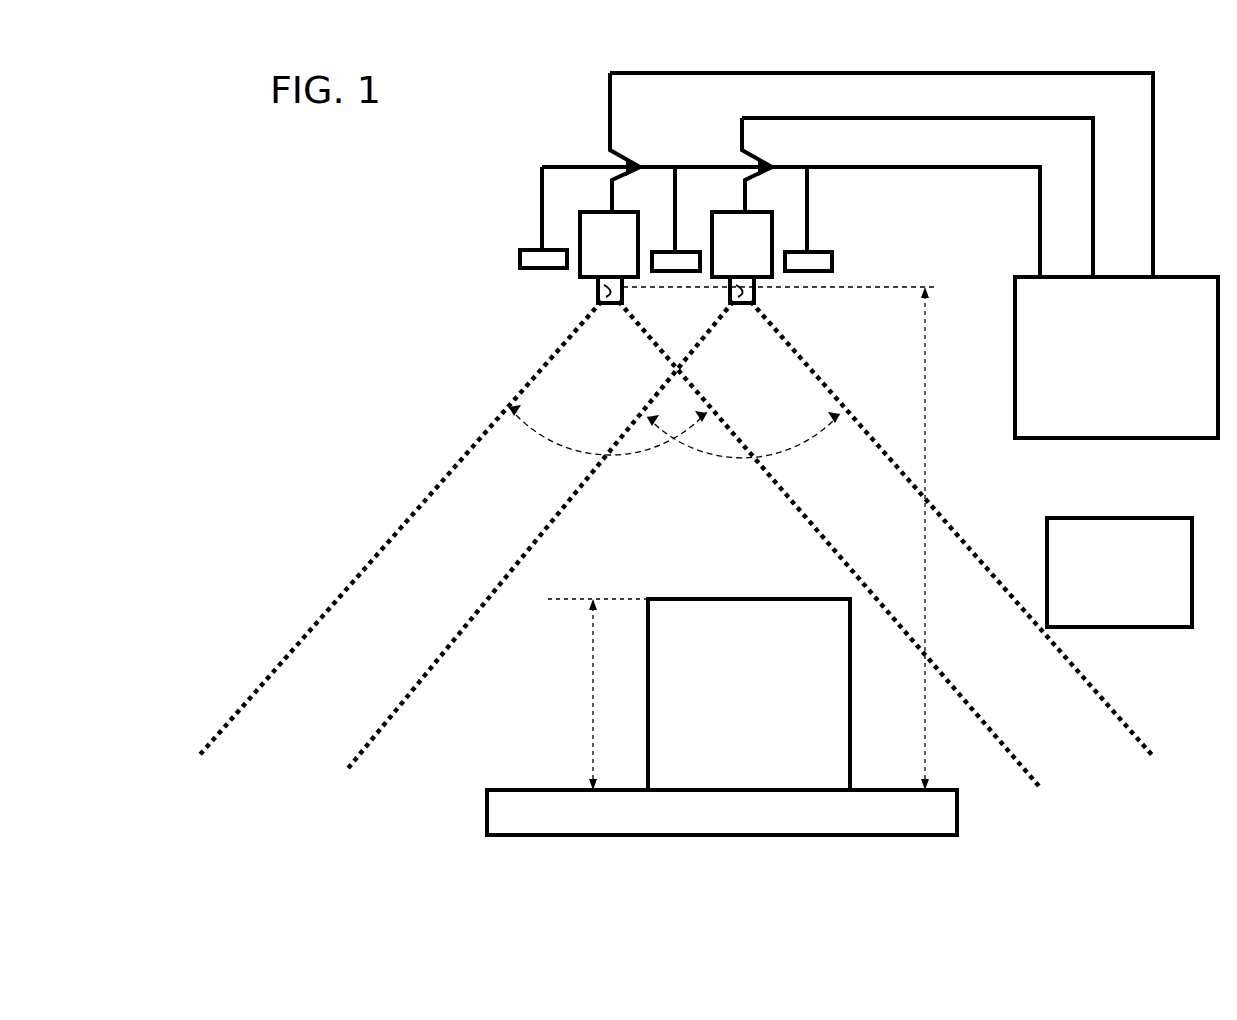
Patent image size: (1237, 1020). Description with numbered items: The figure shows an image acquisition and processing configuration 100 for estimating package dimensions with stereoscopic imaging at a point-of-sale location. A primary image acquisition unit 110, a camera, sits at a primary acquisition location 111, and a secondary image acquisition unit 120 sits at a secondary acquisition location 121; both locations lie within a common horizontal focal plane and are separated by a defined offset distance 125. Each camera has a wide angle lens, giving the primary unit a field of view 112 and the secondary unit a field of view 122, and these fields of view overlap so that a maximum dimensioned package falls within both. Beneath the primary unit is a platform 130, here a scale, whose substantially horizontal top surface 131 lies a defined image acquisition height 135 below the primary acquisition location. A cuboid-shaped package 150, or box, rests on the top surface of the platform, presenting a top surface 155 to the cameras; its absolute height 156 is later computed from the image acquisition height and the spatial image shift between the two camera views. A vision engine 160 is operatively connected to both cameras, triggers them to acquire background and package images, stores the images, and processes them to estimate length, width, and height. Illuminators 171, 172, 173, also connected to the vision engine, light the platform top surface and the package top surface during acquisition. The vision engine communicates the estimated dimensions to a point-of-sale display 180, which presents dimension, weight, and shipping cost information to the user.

The image acquisition and processing configuration 100 is at (342, 198).
The primary image acquisition unit 110 is at (727, 252).
The primary acquisition location 111 is at (741, 305).
The field of view 112 is at (798, 450).
The secondary image acquisition unit 120 is at (594, 252).
The secondary acquisition location 121 is at (603, 305).
The field of view 122 is at (548, 440).
The offset distance 125 is at (650, 290).
The platform 130 is at (775, 823).
The top surface 131 is at (873, 790).
The image acquisition height 135 is at (925, 330).
The package 150 is at (734, 740).
The top surface 155 is at (698, 598).
The height 156 is at (592, 681).
The vision engine 160 is at (1101, 408).
The illuminator 171 is at (537, 272).
The illuminator 172 is at (661, 252).
The illuminator 173 is at (834, 259).
The point-of-sale display 180 is at (1104, 616).